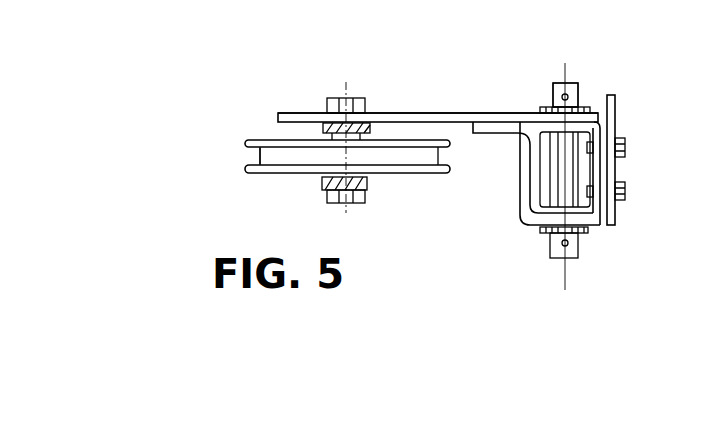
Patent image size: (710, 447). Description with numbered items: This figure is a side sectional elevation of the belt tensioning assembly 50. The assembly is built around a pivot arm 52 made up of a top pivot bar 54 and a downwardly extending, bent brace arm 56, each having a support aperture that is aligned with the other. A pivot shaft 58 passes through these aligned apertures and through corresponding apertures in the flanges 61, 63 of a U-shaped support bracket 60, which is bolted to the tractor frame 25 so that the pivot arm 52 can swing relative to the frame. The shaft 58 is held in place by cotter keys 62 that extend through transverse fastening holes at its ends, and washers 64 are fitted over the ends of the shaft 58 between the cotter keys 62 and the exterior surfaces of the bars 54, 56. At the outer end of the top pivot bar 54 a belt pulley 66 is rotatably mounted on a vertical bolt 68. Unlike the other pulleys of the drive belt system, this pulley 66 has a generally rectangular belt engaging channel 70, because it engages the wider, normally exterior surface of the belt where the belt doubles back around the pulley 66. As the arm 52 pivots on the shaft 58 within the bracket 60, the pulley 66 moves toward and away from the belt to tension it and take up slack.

The belt tensioning assembly 50 is at (228, 109).
The pivot arm 52 is at (492, 111).
The top pivot bar 54 is at (385, 118).
The brace arm 56 is at (523, 182).
The pivot shaft 58 is at (582, 93).
The U-shaped support bracket 60 is at (600, 172).
The flange of support bracket 61 is at (550, 137).
The cotter keys 62 is at (552, 100).
The flange of support bracket 63 is at (530, 203).
The washers 64 is at (590, 110).
The belt pulley 66 is at (382, 173).
The vertical bolt 68 is at (340, 98).
The belt engaging channel 70 is at (258, 157).
The tractor frame 25 is at (615, 227).